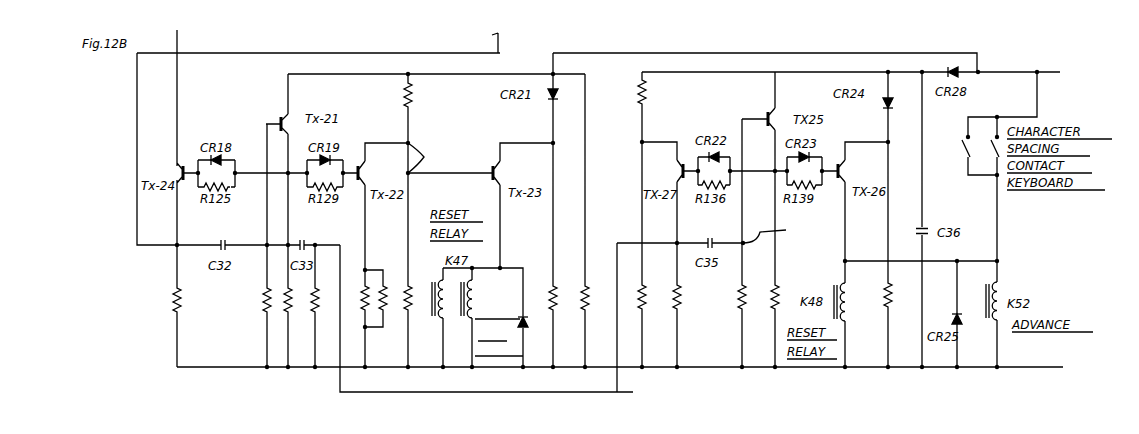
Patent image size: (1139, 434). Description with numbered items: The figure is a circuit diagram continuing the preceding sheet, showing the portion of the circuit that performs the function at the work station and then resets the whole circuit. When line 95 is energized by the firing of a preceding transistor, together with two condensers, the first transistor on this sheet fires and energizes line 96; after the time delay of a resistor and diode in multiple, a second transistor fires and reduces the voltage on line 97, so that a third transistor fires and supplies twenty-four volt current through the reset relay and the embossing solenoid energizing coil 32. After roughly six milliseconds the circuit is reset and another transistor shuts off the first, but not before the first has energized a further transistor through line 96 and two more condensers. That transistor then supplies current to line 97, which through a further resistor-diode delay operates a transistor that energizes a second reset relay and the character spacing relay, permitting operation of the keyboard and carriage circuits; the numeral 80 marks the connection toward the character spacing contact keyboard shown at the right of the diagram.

The line 95 is at (497, 50).
The line 96 is at (289, 178).
The line 97 is at (428, 158).
The character spacing contact keyboard line 80 is at (1037, 72).
The embossing solenoid energizing coil 32 is at (510, 317).